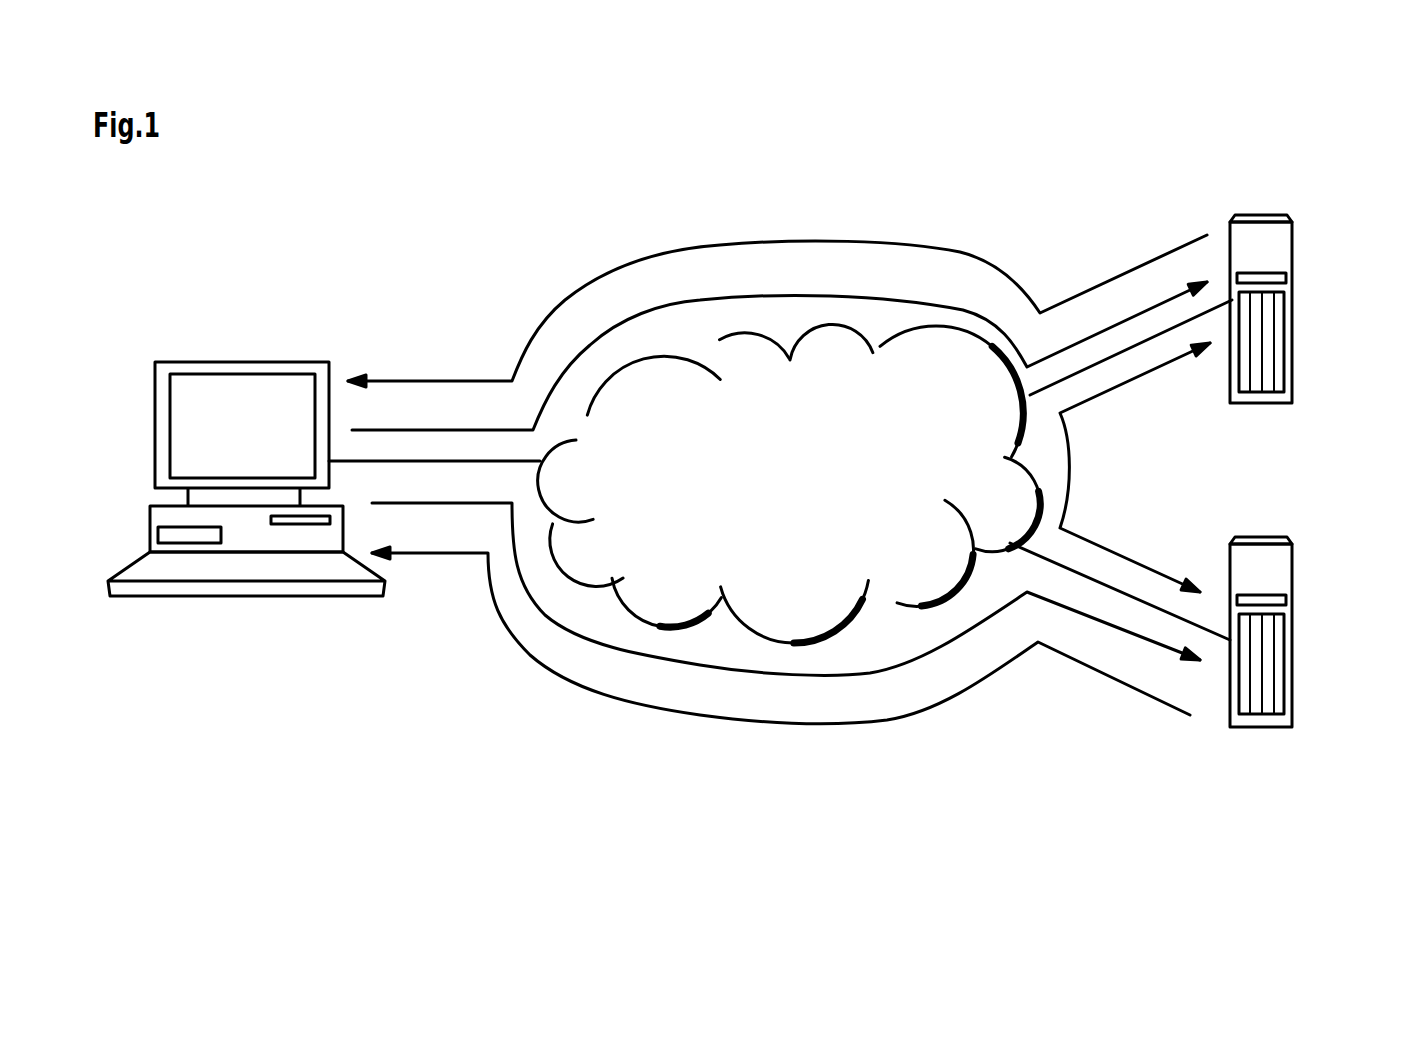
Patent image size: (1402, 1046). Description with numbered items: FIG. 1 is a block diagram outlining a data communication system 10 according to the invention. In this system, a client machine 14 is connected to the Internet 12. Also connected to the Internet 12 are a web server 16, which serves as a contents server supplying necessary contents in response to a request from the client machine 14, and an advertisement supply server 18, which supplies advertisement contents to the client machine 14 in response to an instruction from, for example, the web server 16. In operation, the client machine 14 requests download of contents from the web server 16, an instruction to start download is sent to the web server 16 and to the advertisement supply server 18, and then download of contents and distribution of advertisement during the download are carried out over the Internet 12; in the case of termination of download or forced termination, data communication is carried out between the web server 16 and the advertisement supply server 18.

The data communication system 10 is at (754, 483).
The Internet 12 is at (680, 628).
The client machine 14 is at (215, 596).
The web server 16 is at (1293, 318).
The advertisement supply server 18 is at (1293, 640).